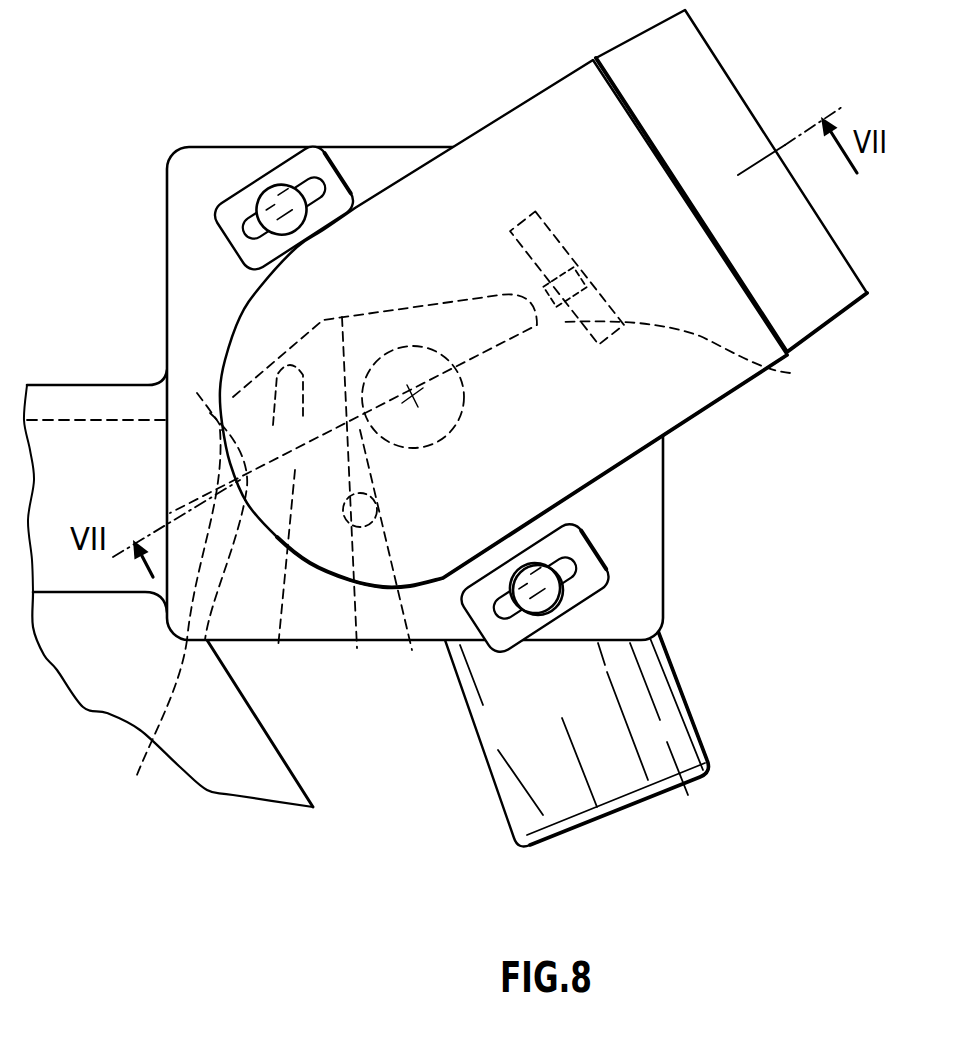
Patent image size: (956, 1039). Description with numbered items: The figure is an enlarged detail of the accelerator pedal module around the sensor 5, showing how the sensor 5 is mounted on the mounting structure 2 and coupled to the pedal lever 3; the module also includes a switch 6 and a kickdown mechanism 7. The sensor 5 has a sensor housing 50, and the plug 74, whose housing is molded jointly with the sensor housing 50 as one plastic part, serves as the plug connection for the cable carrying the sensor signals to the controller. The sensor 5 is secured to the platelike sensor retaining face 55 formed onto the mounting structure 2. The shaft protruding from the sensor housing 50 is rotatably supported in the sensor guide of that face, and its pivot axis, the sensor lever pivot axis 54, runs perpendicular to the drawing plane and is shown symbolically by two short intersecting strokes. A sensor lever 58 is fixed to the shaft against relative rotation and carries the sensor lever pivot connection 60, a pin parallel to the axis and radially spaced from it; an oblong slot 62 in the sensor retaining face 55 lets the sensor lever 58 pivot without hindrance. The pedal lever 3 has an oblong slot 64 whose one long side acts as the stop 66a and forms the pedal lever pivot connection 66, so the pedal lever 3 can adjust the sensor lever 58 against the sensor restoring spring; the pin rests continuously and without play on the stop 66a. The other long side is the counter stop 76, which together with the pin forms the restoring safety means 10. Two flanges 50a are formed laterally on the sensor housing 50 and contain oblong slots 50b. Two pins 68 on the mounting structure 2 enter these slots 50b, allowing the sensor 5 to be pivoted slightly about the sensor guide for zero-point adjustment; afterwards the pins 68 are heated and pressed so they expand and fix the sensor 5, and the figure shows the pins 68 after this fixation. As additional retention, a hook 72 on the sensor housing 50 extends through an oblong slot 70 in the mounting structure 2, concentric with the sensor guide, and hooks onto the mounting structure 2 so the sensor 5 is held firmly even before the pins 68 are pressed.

The mounting structure 2 is at (43, 397).
The pedal lever 3 is at (230, 770).
The sensor 5 is at (543, 296).
The switch 6 is at (586, 706).
The kickdown mechanism 7 is at (660, 777).
The restoring safety means 10 is at (145, 734).
The counter stop 76 is at (145, 734).
The sensor housing 50 is at (680, 407).
The flanges 50a is at (598, 588).
The oblong slots 50b is at (563, 535).
The sensor lever pivot axis 54 is at (413, 397).
The sensor retaining face 55 is at (653, 497).
The sensor lever 58 is at (350, 277).
The sensor lever pivot connection 60 is at (270, 410).
The oblong slot 62 is at (357, 501).
The oblong slot 64 is at (277, 577).
The pedal lever pivot connection 66 is at (197, 393).
The stop 66a is at (210, 413).
The pins 68 is at (552, 590).
The oblong slot 70 is at (790, 373).
The hook 72 is at (572, 272).
The plug 74 is at (740, 117).